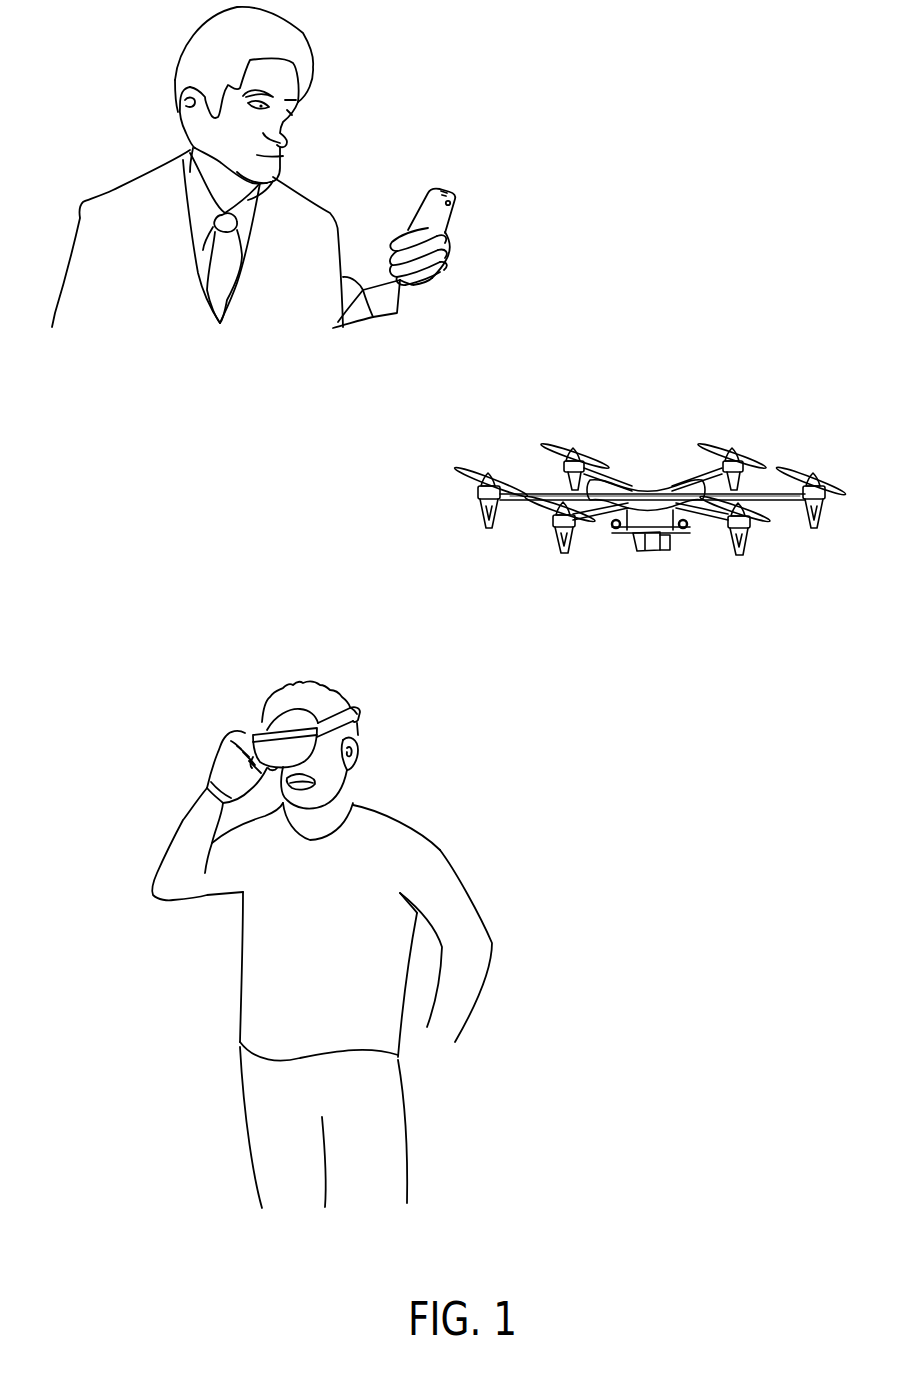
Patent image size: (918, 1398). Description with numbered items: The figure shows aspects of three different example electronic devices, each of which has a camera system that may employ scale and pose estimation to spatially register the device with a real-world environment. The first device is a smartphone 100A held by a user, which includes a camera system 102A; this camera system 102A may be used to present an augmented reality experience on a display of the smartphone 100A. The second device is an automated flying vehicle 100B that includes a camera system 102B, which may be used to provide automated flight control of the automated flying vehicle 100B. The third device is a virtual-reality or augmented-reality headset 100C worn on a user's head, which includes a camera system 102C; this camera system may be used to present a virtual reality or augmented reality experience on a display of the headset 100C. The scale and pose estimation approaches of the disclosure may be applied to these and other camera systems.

The smartphone 100A is at (420, 217).
The camera system 102A is at (453, 203).
The automated flying vehicle 100B is at (640, 487).
The camera system 102B is at (650, 551).
The virtual-reality or augmented-reality headset 100C is at (362, 712).
The camera system 102C is at (258, 730).